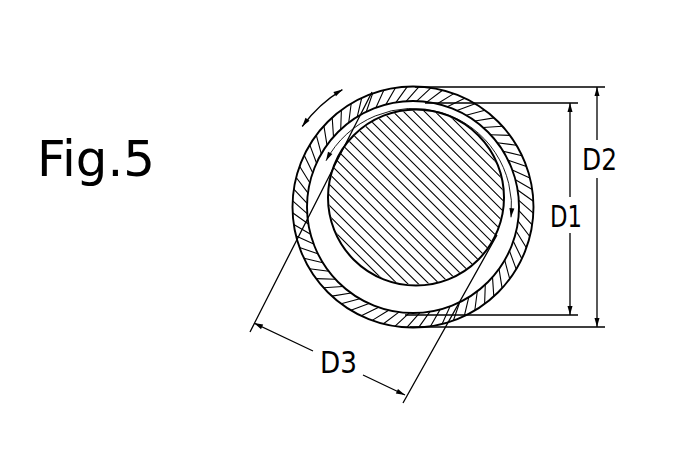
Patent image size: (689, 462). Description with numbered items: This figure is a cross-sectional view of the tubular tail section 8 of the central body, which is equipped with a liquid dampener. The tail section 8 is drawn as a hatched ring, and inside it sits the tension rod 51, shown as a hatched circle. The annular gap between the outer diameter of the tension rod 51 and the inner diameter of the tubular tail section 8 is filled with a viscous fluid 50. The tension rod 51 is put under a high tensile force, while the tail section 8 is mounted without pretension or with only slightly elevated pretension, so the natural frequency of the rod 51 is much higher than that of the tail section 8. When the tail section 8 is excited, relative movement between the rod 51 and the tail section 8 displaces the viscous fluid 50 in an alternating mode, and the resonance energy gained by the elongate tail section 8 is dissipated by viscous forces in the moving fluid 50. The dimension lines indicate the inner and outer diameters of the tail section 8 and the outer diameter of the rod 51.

The tail section 8 is at (405, 328).
The viscous fluid 50 is at (443, 292).
The tension rod 51 is at (430, 147).